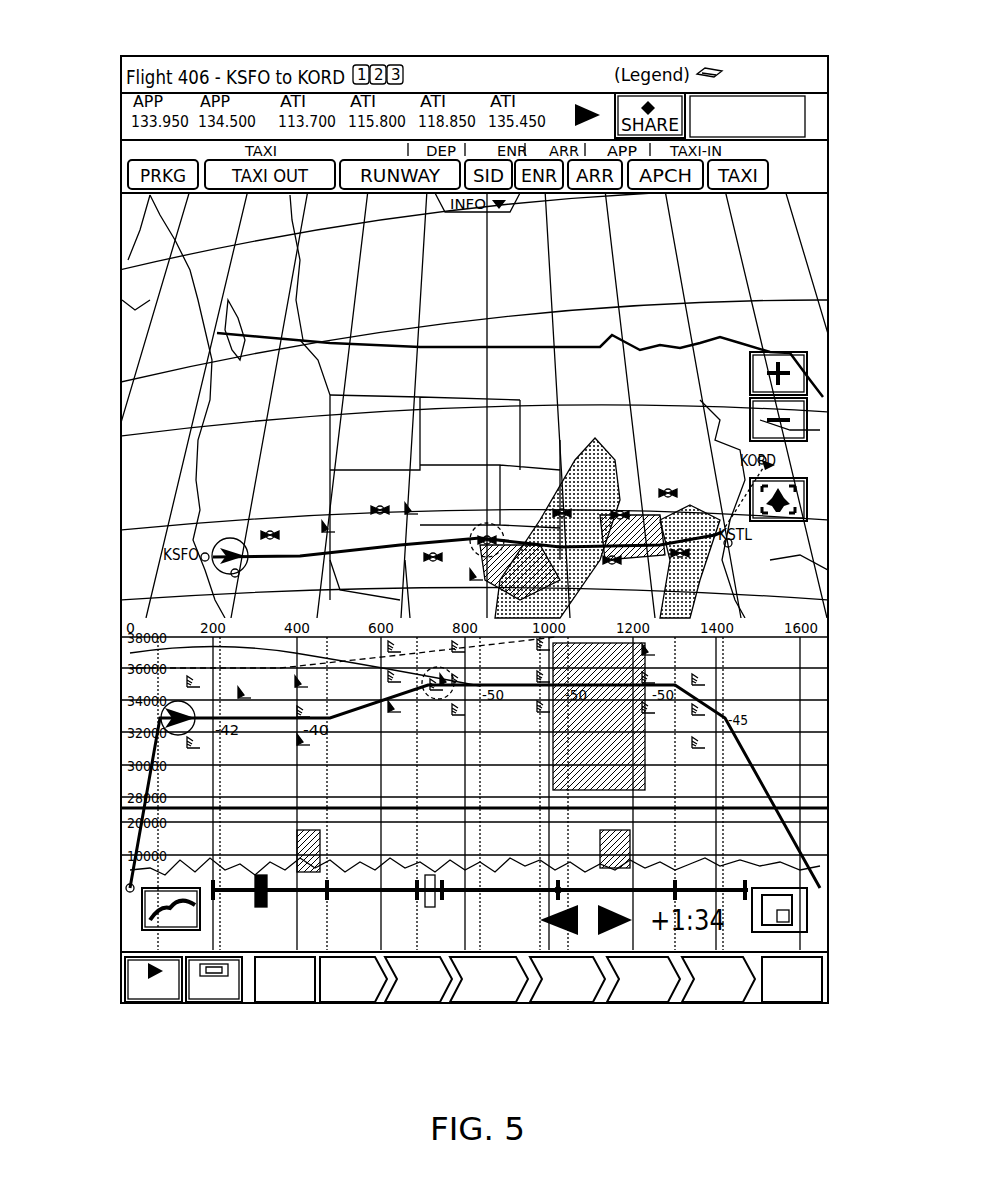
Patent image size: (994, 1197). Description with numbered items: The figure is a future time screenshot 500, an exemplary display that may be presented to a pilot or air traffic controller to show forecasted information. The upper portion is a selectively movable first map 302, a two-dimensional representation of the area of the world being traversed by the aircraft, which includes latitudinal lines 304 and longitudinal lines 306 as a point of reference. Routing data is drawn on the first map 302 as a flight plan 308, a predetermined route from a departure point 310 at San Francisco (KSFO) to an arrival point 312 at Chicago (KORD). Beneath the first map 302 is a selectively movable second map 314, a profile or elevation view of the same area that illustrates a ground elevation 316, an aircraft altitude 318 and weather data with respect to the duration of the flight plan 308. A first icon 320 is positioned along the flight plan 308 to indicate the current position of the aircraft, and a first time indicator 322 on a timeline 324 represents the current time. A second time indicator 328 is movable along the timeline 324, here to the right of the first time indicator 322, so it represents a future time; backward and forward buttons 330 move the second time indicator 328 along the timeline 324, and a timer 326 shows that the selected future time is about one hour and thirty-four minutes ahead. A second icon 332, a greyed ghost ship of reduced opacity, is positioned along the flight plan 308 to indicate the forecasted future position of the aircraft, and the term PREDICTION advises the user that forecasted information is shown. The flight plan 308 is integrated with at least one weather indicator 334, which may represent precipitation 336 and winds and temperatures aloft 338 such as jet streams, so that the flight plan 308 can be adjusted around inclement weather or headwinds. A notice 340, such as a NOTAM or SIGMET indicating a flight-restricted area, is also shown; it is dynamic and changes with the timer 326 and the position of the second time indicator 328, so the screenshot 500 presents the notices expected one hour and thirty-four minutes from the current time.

The first map 302 is at (815, 422).
The latitudinal lines 304 is at (795, 265).
The longitudinal lines 306 is at (550, 242).
The flight plan 308 is at (222, 540).
The departure point 310 is at (205, 562).
The arrival point 312 is at (790, 476).
The second map 314 is at (805, 752).
The ground elevation 316 is at (172, 872).
The aircraft altitude 318 is at (800, 806).
The first icon 320 is at (213, 550).
The first time indicator 322 is at (262, 906).
The timeline 324 is at (397, 895).
The timer 326 is at (748, 940).
The second time indicator 328 is at (415, 866).
The backward and forward buttons 330 is at (575, 890).
The second icon 332 is at (180, 427).
The weather indicator 334 is at (487, 522).
The precipitation 336 is at (800, 302).
The winds and temperatures aloft 338 is at (408, 512).
The notice 340 is at (705, 612).
The future time screenshot 500 is at (105, 950).